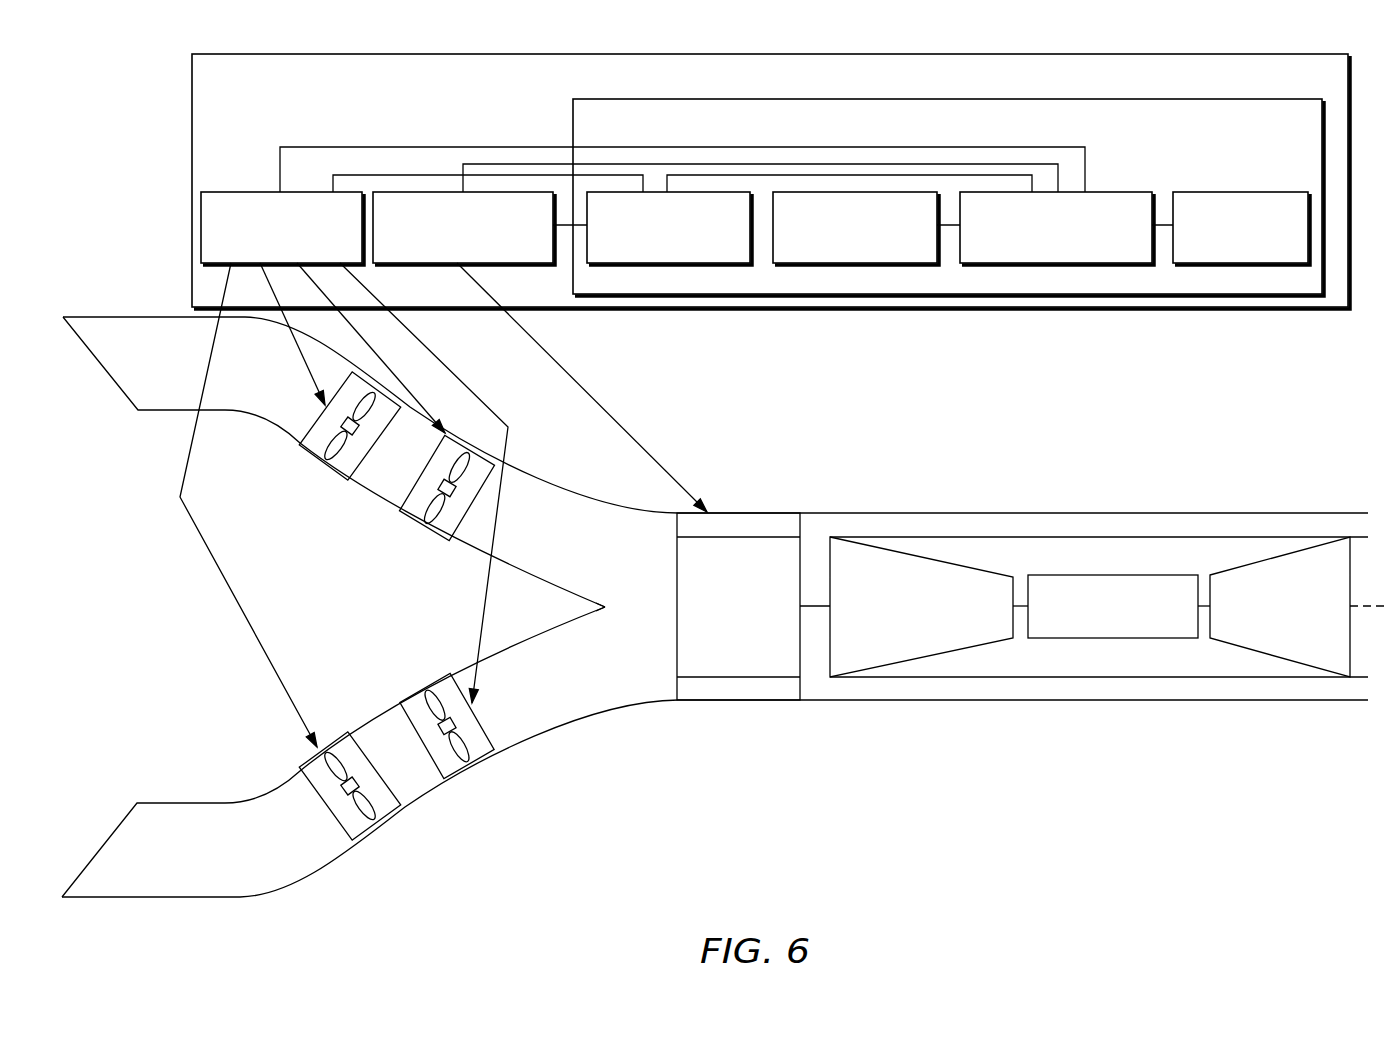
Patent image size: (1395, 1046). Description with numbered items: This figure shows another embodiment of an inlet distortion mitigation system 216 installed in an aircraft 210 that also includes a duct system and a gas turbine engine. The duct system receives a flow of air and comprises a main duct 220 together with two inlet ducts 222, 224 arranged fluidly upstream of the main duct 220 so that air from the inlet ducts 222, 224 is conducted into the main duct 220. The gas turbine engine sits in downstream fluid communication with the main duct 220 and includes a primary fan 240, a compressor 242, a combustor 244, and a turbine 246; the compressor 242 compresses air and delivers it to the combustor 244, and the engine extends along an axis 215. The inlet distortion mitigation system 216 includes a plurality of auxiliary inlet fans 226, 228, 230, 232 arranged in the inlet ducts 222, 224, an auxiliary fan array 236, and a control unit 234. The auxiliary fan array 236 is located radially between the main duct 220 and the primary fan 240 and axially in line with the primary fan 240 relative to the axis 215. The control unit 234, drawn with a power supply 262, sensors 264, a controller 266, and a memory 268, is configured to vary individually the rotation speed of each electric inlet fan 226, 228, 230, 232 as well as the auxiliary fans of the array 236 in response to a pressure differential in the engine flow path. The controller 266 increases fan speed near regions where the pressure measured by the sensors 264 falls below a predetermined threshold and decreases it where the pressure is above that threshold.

The aircraft 210 is at (113, 193).
The axis 215 is at (1378, 603).
The inlet distortion mitigation system 216 is at (192, 93).
The main duct 220 is at (665, 618).
The inlet duct 222 is at (192, 863).
The inlet duct 224 is at (190, 373).
The auxiliary inlet fan 226 is at (383, 832).
The auxiliary inlet fan 228 is at (317, 468).
The auxiliary inlet fan 230 is at (472, 773).
The auxiliary inlet fan 232 is at (415, 533).
The control unit 234 is at (1177, 97).
The auxiliary fan array 236 is at (538, 263).
The primary fan 240 is at (742, 678).
The compressor 242 is at (903, 667).
The combustor 244 is at (1088, 640).
The turbine 246 is at (1297, 667).
The power supply 262 is at (685, 263).
The sensors 264 is at (842, 263).
The controller 266 is at (1122, 192).
The memory 268 is at (1250, 192).